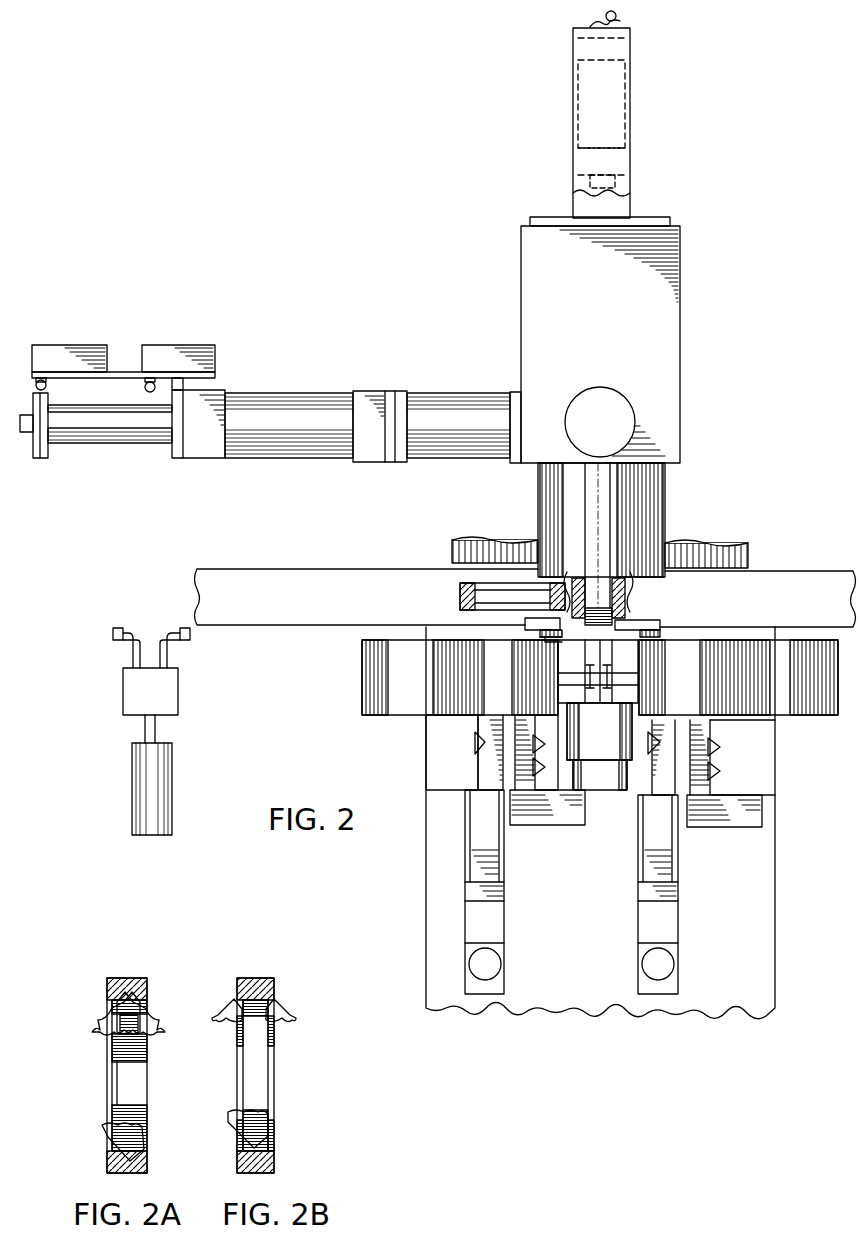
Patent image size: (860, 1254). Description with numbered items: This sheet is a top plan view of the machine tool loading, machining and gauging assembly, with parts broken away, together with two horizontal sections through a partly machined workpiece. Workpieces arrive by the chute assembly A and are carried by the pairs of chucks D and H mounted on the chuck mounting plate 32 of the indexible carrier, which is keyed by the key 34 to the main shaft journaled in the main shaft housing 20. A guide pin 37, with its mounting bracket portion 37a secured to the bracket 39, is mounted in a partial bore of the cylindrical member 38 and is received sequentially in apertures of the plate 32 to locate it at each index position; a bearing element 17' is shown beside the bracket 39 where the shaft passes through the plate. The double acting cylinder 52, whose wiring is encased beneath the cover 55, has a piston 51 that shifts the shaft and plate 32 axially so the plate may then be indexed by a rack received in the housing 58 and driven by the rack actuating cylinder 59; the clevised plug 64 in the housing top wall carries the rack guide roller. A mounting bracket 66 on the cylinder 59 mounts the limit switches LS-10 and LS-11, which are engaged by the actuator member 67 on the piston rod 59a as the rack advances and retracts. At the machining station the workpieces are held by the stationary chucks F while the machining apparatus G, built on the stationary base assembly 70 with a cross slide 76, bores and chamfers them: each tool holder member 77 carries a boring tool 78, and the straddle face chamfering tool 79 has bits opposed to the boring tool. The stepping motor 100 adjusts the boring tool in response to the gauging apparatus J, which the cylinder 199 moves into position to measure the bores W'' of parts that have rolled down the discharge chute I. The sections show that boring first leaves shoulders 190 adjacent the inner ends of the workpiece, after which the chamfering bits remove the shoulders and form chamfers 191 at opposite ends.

In FIG. 2, the main shaft housing 20 is at (676, 359).
In FIG. 2, the chuck mounting plate 32 is at (626, 664).
In FIG. 2, the key 34 is at (540, 504).
In FIG. 2, the guide pin 37 is at (536, 624).
In FIG. 2, the mounting bracket portion 37a is at (626, 627).
In FIG. 2, the cylindrical member 38 is at (576, 463).
In FIG. 2, the bracket 39 is at (624, 612).
In FIG. 2, the bearing 17' is at (611, 592).
In FIG. 2, the piston 51 is at (592, 24).
In FIG. 2, the double acting cylinder 52 is at (578, 106).
In FIG. 2, the cover 55 is at (580, 155).
In FIG. 2, the housing 58 is at (450, 453).
In FIG. 2, the rack actuating cylinder 59 is at (296, 453).
In FIG. 2, the piston rod 59a is at (106, 443).
In FIG. 2, the clevised plug 64 is at (614, 404).
In FIG. 2, the mounting bracket 66 is at (121, 372).
In FIG. 2, the actuator member 67 is at (42, 458).
In FIG. 2, the stationary base assembly 70 is at (619, 823).
In FIG. 2, the cross slide 76 is at (776, 838).
In FIG. 2, the tool holder member 77 is at (472, 828).
In FIG. 2, the boring tool 78 is at (474, 744).
In FIG. 2A, the boring tool 78 is at (106, 1134).
In FIG. 2B, the boring tool 78 is at (230, 1116).
In FIG. 2, the straddle face chamfering tool 79 is at (536, 734).
In FIG. 2A, the straddle face chamfering tool 79 is at (98, 1032).
In FIG. 2B, the straddle face chamfering tool 79 is at (222, 1032).
In FIG. 2, the stepping motor 100 is at (492, 966).
In FIG. 2A, the shoulders 190 is at (112, 1152).
In FIG. 2B, the chamfers 191 is at (234, 999).
In FIG. 2, the cylinder 199 is at (170, 773).
In FIG. 2, the chute assembly A is at (791, 571).
In FIG. 2, the chuck D is at (698, 700).
In FIG. 2, the stationary workpiece holding chucks F is at (452, 551).
In FIG. 2, the machining apparatus G is at (637, 823).
In FIG. 2, the chuck H is at (490, 703).
In FIG. 2, the discharge chute I is at (278, 566).
In FIG. 2, the gauging apparatus J is at (176, 688).
In FIG. 2, the limit switch LS-10 is at (64, 345).
In FIG. 2, the limit switch LS-11 is at (169, 345).
In FIG. 2, the bores W'' is at (480, 596).
In FIG. 2B, the bores W'' is at (282, 1075).